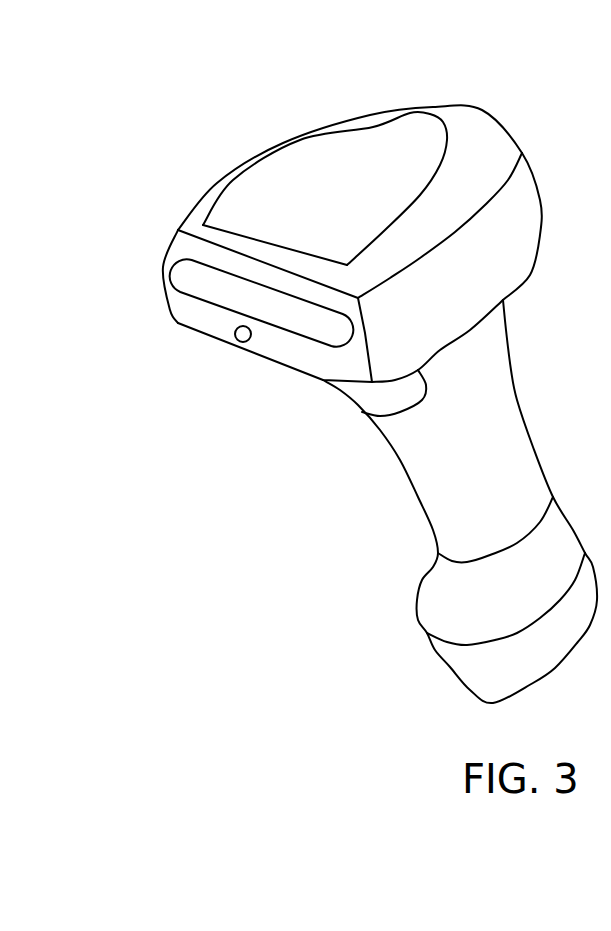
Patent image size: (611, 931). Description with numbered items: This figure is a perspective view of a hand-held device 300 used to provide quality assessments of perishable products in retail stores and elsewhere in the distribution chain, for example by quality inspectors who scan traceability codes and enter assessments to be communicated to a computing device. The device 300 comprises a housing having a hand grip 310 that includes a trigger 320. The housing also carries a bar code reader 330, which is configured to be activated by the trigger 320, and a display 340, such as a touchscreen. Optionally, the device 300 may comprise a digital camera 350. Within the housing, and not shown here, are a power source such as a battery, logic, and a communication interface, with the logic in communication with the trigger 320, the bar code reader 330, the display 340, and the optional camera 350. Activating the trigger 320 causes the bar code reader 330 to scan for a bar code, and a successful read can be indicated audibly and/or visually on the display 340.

The hand-held device 300 is at (482, 110).
The hand grip 310 is at (418, 497).
The trigger 320 is at (365, 398).
The bar code reader 330 is at (215, 285).
The display 340 is at (293, 185).
The digital camera 350 is at (238, 341).